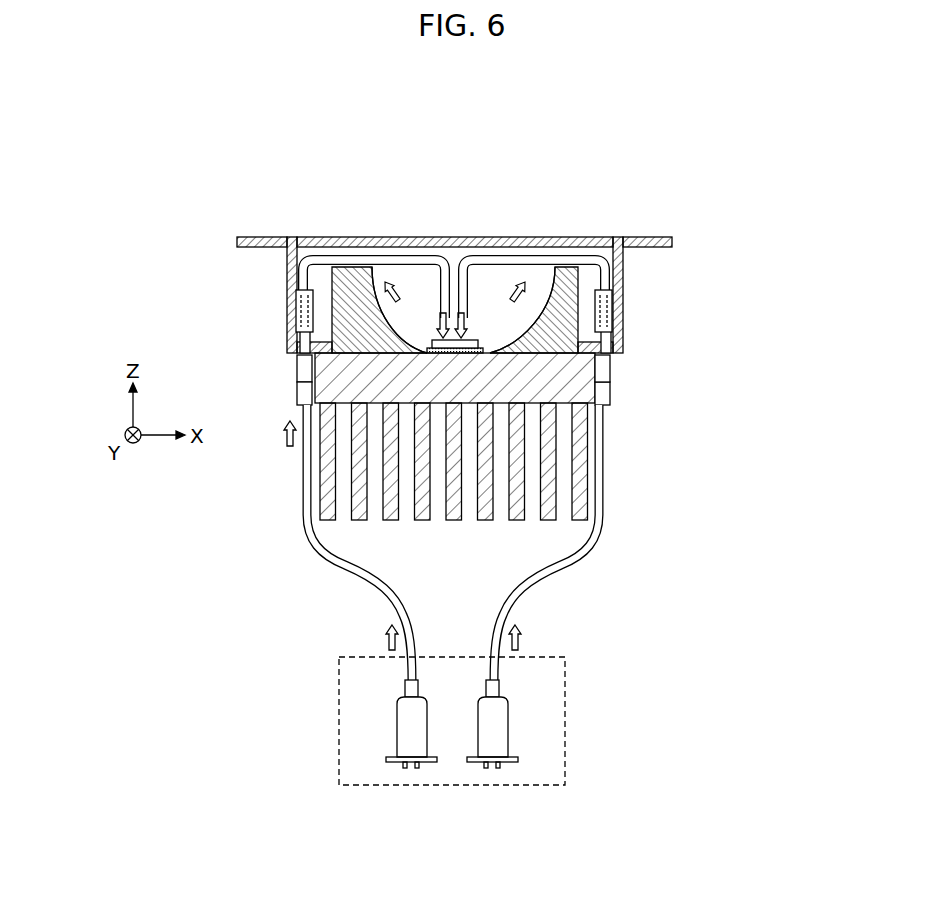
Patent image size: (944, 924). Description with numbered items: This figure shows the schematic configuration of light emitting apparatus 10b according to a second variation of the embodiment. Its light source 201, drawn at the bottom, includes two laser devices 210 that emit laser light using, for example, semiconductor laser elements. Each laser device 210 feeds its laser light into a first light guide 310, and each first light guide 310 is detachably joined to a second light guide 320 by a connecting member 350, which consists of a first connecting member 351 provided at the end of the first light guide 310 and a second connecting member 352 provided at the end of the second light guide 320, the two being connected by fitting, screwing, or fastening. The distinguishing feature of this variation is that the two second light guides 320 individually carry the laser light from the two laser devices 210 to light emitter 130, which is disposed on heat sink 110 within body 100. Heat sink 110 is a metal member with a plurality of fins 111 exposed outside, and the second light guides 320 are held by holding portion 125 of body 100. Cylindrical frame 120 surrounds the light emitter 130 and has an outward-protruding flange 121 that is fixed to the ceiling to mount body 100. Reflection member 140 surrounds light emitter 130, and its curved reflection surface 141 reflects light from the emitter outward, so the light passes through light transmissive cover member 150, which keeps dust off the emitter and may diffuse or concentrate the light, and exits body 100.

The light emitting apparatus 10b is at (705, 203).
The body 100 is at (517, 477).
The heat sink 110 is at (552, 378).
The fins 111 is at (487, 520).
The frame 120 is at (625, 300).
The flange 121 is at (649, 248).
The holding portion 125 is at (311, 318).
The light emitter 130 is at (473, 328).
The reflection member 140 is at (569, 350).
The reflection surface 141 is at (362, 294).
The cover member 150 is at (553, 237).
The light source 201 is at (492, 721).
The laser device 210 is at (397, 733).
The first light guide 310 is at (312, 553).
The second light guide 320 is at (415, 255).
The connecting member 350 is at (452, 384).
The first connecting member 351 is at (297, 396).
The second connecting member 352 is at (297, 366).